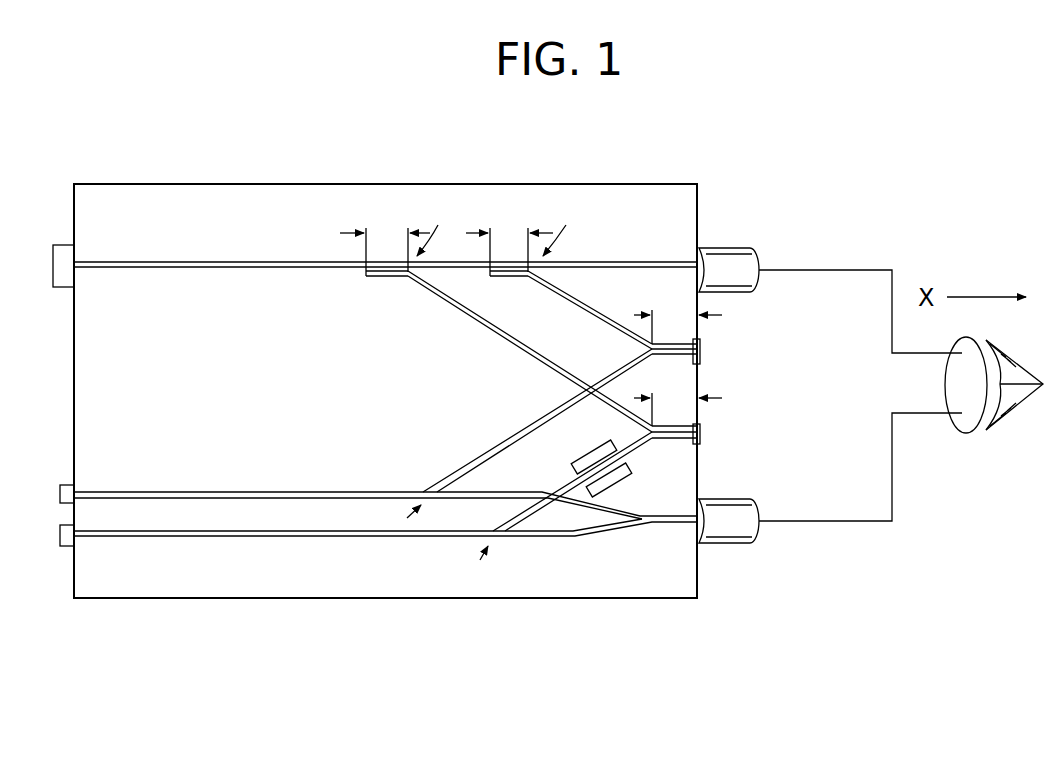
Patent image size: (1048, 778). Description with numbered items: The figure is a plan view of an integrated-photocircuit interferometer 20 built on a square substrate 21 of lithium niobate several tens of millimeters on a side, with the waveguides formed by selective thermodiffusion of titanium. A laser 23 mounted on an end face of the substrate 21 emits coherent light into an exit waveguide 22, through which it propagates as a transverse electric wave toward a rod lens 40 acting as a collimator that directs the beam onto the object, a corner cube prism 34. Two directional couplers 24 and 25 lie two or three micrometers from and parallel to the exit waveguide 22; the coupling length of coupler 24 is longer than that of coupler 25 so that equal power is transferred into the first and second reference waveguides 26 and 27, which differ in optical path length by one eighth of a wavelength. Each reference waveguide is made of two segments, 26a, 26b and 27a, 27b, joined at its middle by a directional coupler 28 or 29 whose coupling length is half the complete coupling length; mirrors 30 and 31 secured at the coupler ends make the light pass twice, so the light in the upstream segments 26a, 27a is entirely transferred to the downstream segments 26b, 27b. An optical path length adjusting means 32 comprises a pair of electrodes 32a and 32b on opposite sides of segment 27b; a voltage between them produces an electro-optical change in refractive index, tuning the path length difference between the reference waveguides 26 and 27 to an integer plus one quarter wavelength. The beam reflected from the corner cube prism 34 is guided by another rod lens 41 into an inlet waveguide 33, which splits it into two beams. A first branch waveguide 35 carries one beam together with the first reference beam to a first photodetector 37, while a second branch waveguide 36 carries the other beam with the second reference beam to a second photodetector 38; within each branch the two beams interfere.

The integrated-photocircuit interferometer 20 is at (381, 358).
The substrate 21 is at (238, 184).
The exit waveguide 22 is at (213, 261).
The laser 23 is at (52, 252).
The directional coupler 24 is at (384, 276).
The directional coupler 25 is at (509, 276).
The first reference waveguide 26 is at (537, 381).
The upstream segment of first reference waveguide 26a is at (578, 301).
The downstream segment of first reference waveguide 26b is at (472, 461).
The second reference waveguide 27 is at (530, 401).
The upstream segment of second reference waveguide 27a is at (478, 316).
The downstream segment of second reference waveguide 27b is at (565, 487).
The directional coupler 28 is at (679, 361).
The directional coupler 29 is at (680, 445).
The mirror 30 is at (701, 351).
The mirror 31 is at (702, 436).
The optical path length adjusting means 32 is at (612, 459).
The electrode 32a is at (582, 453).
The electrode 32b is at (625, 479).
The inlet waveguide 33 is at (637, 527).
The corner cube prism 34 is at (1014, 408).
The first branch waveguide 35 is at (262, 492).
The second branch waveguide 36 is at (282, 537).
The first photodetector 37 is at (60, 492).
The second photodetector 38 is at (60, 540).
The rod lens 40 is at (744, 249).
The rod lens 41 is at (741, 543).